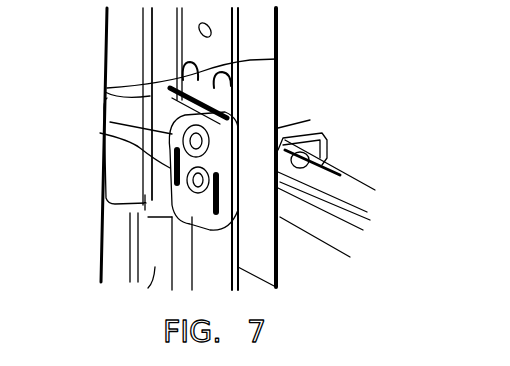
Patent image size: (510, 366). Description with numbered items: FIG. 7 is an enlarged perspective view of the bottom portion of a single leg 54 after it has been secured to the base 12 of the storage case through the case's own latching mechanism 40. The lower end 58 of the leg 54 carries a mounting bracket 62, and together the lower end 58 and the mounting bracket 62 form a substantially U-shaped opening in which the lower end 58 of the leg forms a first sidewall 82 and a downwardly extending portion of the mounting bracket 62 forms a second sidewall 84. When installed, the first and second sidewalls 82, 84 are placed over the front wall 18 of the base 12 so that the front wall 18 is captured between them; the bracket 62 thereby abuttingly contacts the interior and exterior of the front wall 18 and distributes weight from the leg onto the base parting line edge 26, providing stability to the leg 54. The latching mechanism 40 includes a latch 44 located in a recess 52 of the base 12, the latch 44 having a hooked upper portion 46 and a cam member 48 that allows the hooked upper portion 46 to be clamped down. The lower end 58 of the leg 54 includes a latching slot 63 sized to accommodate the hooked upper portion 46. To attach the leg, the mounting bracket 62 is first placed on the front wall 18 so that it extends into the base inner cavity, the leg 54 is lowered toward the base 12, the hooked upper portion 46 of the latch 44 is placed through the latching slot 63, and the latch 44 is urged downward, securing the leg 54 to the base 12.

The base 12 is at (114, 238).
The front wall 18 is at (117, 253).
The parting line edge 26 is at (350, 183).
The latching mechanism 40 is at (150, 194).
The latch 44 is at (100, 133).
The hooked upper portion 46 is at (107, 88).
The cam member 48 is at (110, 122).
The recess 52 is at (153, 268).
The leg 54 is at (123, 46).
The lower end 58 is at (125, 172).
The mounting bracket 62 is at (280, 122).
The latching slot 63 is at (200, 87).
The first sidewall 82 is at (278, 248).
The second sidewall 84 is at (330, 167).